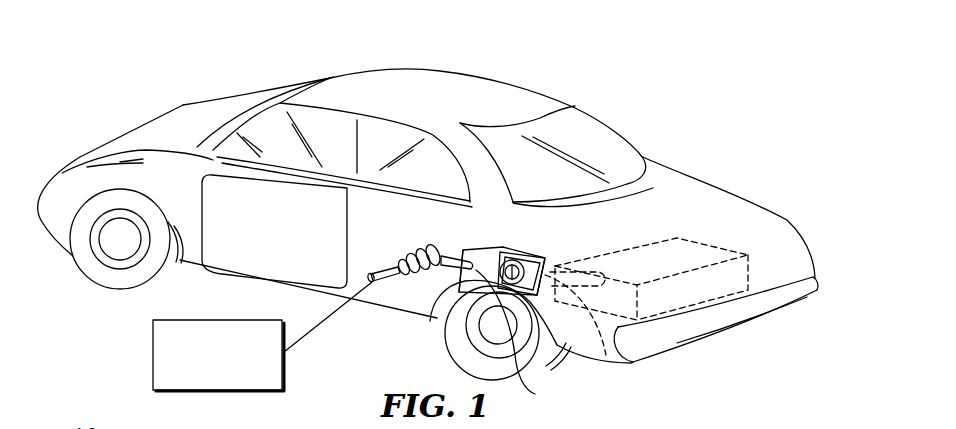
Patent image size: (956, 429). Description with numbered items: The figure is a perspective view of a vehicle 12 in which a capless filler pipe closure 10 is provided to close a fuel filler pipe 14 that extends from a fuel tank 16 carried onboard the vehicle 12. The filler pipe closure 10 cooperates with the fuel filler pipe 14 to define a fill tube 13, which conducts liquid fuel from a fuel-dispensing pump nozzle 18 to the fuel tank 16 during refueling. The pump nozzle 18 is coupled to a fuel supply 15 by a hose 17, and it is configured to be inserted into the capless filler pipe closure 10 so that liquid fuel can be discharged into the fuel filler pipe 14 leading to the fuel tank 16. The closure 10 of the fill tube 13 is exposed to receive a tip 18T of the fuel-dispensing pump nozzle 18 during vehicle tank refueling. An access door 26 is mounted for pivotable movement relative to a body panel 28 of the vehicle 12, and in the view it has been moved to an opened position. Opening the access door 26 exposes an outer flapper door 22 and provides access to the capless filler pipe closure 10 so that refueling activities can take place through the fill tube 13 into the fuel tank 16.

The capless filler pipe closure 10 is at (530, 260).
The vehicle 12 is at (140, 77).
The fill tube 13 is at (823, 175).
The fuel filler pipe 14 is at (601, 348).
The fuel supply 15 is at (153, 360).
The fuel tank 16 is at (663, 257).
The hose 17 is at (313, 330).
The fuel-dispensing pump nozzle 18 is at (413, 247).
The tip 18T is at (525, 337).
The outer flapper door 22 is at (514, 258).
The access door 26 is at (455, 284).
The body panel 28 is at (492, 236).